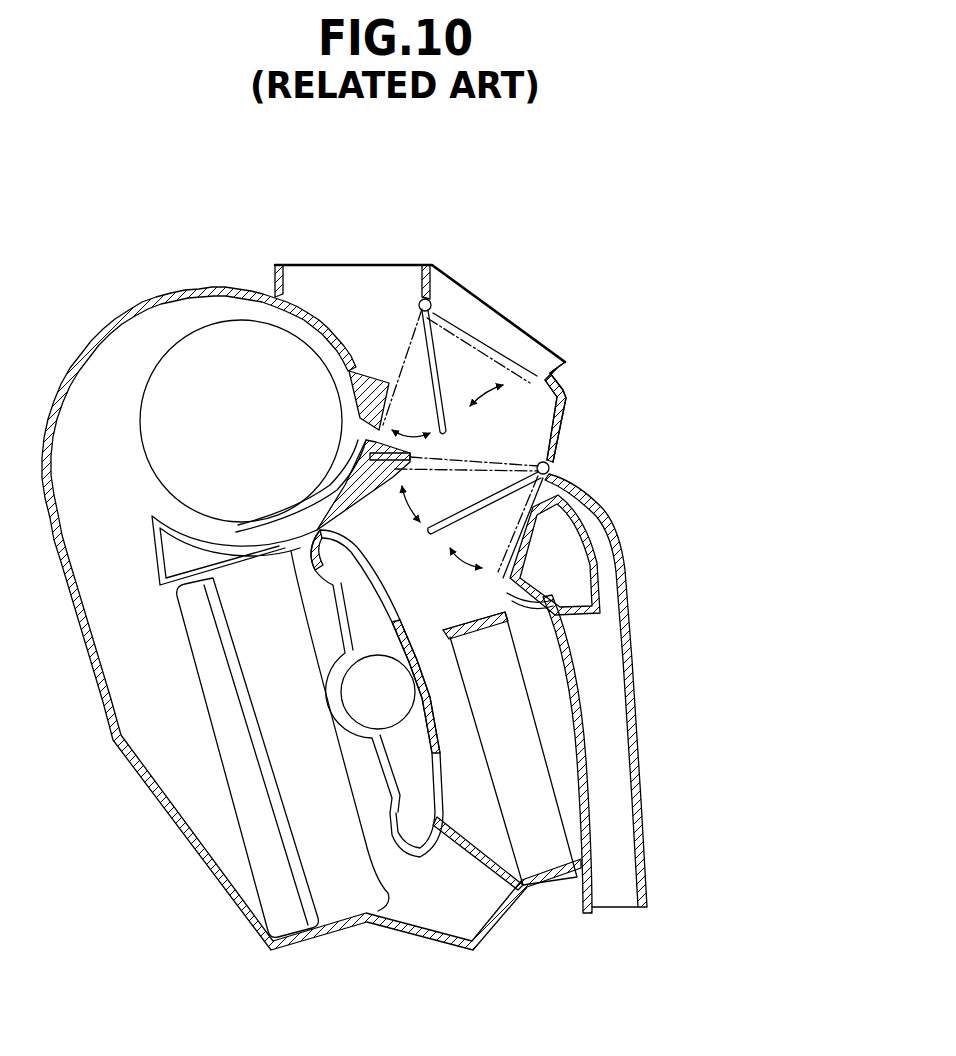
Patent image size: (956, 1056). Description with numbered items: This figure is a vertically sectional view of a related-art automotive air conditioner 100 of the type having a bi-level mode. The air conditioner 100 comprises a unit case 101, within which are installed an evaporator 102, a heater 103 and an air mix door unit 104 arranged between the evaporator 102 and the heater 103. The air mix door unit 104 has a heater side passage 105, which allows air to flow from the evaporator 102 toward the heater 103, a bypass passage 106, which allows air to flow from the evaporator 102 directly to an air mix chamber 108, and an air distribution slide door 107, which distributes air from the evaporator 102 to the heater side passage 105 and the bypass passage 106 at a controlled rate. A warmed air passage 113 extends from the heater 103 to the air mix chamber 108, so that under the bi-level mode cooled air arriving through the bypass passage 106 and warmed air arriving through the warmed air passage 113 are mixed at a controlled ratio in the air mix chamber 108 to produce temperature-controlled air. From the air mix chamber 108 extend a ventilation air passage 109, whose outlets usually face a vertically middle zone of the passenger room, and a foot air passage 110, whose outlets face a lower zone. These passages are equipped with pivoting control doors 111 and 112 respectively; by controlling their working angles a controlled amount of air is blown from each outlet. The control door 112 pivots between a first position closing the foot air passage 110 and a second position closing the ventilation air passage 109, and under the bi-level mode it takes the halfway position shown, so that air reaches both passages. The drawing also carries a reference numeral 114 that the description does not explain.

The automotive air conditioner 100 is at (582, 188).
The unit case 101 is at (146, 303).
The evaporator 102 is at (347, 890).
The heater 103 is at (547, 847).
The air mix door unit 104 is at (428, 870).
The heater side passage 105 is at (425, 783).
The bypass passage 106 is at (357, 600).
The air distribution slide door 107 is at (392, 625).
The air mix chamber 108 is at (500, 528).
The ventilation air passage 109 is at (543, 343).
The foot air passage 110 is at (624, 653).
The control door 111 is at (440, 347).
The control door 112 is at (500, 480).
The warmed air passage 113 is at (578, 730).
The air outlet 114 is at (550, 595).